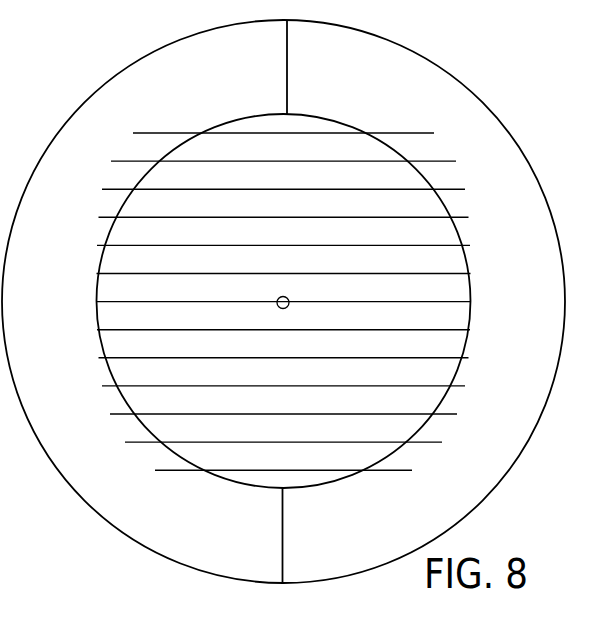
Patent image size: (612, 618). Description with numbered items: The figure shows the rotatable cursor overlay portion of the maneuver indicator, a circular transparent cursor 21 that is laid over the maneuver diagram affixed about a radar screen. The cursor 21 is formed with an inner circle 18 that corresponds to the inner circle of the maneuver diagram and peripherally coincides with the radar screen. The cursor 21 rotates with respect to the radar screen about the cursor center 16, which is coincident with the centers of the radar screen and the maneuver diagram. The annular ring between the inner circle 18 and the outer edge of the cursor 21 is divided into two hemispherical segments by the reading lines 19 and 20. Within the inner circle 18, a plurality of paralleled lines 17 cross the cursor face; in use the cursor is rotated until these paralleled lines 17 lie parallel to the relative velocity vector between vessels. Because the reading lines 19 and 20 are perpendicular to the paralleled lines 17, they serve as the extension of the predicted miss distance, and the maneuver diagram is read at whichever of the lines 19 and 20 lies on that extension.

The cursor center 16 is at (288, 299).
The paralleled lines 17 is at (225, 248).
The inner circle 18 is at (419, 170).
The cursor reading line 19 is at (287, 83).
The cursor reading line 20 is at (283, 542).
The circular transparent cursor 21 is at (489, 54).